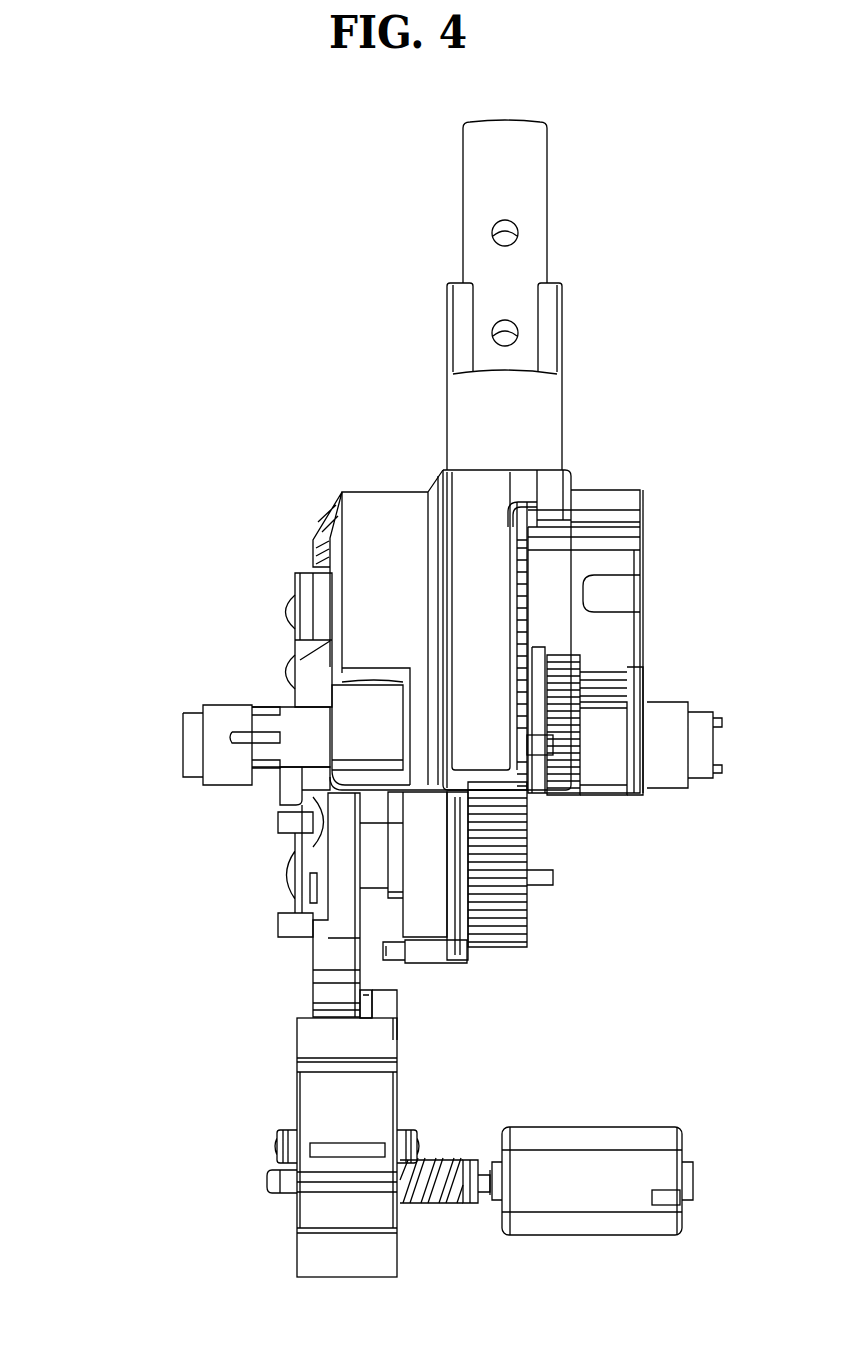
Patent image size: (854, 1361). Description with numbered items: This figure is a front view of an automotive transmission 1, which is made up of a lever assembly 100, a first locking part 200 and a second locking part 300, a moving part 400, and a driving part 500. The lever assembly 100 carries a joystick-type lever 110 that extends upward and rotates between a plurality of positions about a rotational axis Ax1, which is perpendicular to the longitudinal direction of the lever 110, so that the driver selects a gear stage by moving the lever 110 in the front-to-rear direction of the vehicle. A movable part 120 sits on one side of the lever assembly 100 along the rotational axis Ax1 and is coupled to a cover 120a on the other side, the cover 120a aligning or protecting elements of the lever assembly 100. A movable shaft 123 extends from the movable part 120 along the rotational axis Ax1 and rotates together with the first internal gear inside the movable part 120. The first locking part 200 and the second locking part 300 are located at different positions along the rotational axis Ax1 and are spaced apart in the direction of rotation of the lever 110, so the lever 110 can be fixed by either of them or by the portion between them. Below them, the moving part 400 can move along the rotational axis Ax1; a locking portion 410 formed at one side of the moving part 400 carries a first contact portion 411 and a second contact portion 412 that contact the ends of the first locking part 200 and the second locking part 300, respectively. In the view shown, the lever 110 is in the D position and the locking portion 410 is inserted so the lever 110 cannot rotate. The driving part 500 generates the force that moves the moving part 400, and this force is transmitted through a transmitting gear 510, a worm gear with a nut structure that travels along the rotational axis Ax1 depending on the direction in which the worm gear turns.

The automotive transmission 1 is at (735, 139).
The lever assembly 100 is at (617, 486).
The lever 110 is at (530, 177).
The movable part 120 is at (384, 507).
The cover 120a is at (555, 487).
The movable shaft 123 is at (218, 717).
The rotational axis Ax1 is at (183, 742).
The first locking part 200 is at (323, 952).
The second locking part 300 is at (422, 870).
The locking portion 410 is at (510, 1008).
The first contact portion 411 is at (362, 990).
The second contact portion 412 is at (384, 1013).
The moving part 400 is at (320, 1118).
The driving part 500 is at (596, 1200).
The transmitting gear 510 is at (470, 1207).